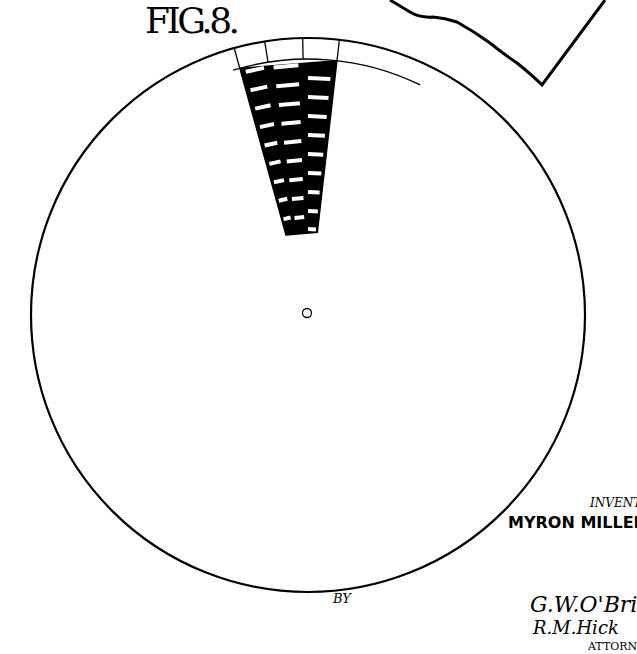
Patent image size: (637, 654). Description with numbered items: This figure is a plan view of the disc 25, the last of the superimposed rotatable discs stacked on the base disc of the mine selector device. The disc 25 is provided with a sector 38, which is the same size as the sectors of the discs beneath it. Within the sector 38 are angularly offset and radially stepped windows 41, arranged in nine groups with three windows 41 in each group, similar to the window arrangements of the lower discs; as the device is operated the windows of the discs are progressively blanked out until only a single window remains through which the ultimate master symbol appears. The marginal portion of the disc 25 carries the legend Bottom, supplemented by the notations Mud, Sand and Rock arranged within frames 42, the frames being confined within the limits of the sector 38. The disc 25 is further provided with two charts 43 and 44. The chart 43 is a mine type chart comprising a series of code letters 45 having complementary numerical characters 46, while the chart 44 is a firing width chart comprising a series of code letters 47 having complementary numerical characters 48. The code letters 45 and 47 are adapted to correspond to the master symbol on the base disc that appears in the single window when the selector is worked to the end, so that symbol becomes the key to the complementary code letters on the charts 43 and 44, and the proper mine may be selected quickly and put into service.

The disc 25 is at (578, 241).
The sector 38 is at (330, 161).
The windows 41 is at (245, 88).
The frames 42 is at (334, 43).
The chart 43 is at (118, 322).
The chart 44 is at (485, 319).
The code letters 45 is at (158, 345).
The numerical characters 46 is at (140, 408).
The code letters 47 is at (328, 342).
The numerical characters 48 is at (367, 428).